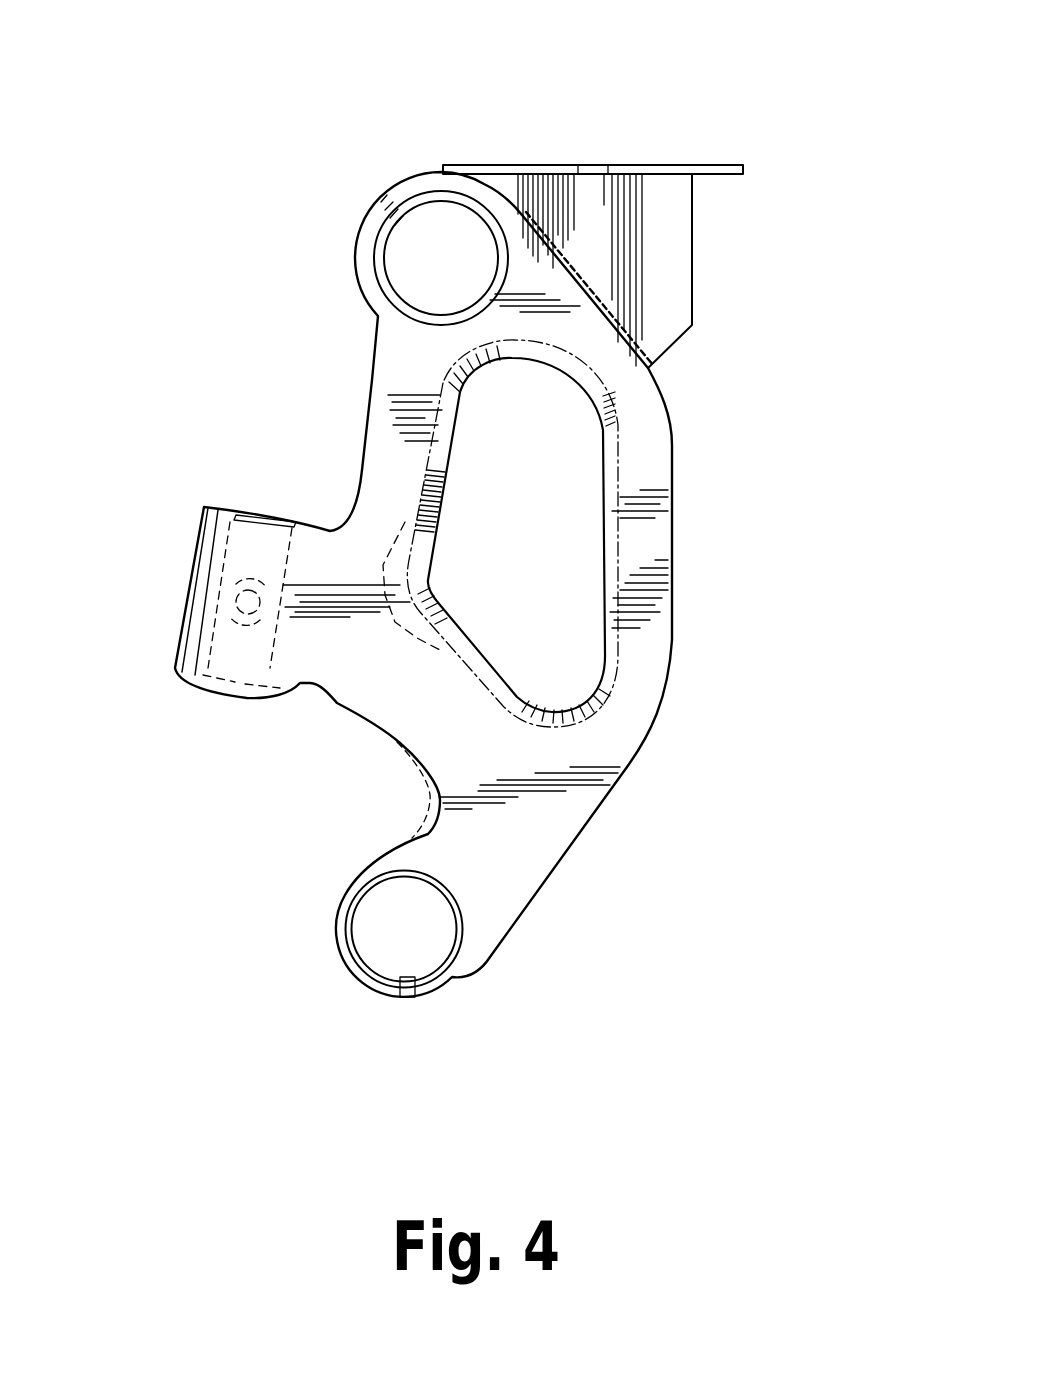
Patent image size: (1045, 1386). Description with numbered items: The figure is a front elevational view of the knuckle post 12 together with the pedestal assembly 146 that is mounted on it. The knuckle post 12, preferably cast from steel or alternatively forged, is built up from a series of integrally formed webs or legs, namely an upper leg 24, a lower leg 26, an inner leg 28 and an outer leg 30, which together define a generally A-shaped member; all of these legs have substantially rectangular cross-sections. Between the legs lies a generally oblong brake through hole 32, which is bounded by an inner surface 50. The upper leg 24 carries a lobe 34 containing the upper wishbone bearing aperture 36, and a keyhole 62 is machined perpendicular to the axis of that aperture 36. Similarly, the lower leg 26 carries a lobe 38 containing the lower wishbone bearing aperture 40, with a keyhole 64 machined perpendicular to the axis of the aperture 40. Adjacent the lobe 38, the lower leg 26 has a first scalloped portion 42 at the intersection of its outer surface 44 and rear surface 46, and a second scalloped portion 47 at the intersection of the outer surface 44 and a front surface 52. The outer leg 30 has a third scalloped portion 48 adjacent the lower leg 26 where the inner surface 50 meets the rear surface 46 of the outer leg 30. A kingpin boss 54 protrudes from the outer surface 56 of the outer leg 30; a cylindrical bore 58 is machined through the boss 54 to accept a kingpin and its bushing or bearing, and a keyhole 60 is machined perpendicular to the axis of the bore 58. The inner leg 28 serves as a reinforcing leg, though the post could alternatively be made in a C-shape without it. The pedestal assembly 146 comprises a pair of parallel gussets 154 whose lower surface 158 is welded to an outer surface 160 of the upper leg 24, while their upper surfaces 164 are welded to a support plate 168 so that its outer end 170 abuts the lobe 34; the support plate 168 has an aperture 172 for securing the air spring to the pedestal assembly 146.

The knuckle post 12 is at (670, 628).
The upper leg 24 is at (587, 335).
The lower leg 26 is at (403, 712).
The inner leg 28 is at (653, 537).
The outer leg 30 is at (371, 358).
The brake through hole 32 is at (522, 624).
The lobe 34 is at (470, 187).
The upper wishbone bearing aperture 36 is at (422, 268).
The lobe 38 is at (450, 982).
The lower wishbone bearing aperture 40 is at (388, 918).
The first scalloped portion 42 is at (428, 763).
The outer surface 44 is at (320, 692).
The rear surface 46 is at (476, 856).
The second scalloped portion 47 is at (413, 808).
The third scalloped portion 48 is at (408, 606).
The inner surface 50 is at (446, 473).
The front surface 52 is at (380, 504).
The kingpin boss 54 is at (185, 622).
The outer surface 56 is at (372, 440).
The cylindrical bore 58 is at (220, 692).
The keyhole 60 is at (238, 592).
The keyhole 62 is at (372, 190).
The keyhole 64 is at (400, 1002).
The pedestal assembly 146 is at (658, 165).
The gussets 154 is at (673, 228).
The lower surface 158 is at (648, 367).
The outer surface 160 is at (673, 417).
The upper surfaces 164 is at (690, 165).
The support plate 168 is at (554, 164).
The outer end 170 is at (457, 163).
The aperture 172 is at (598, 162).